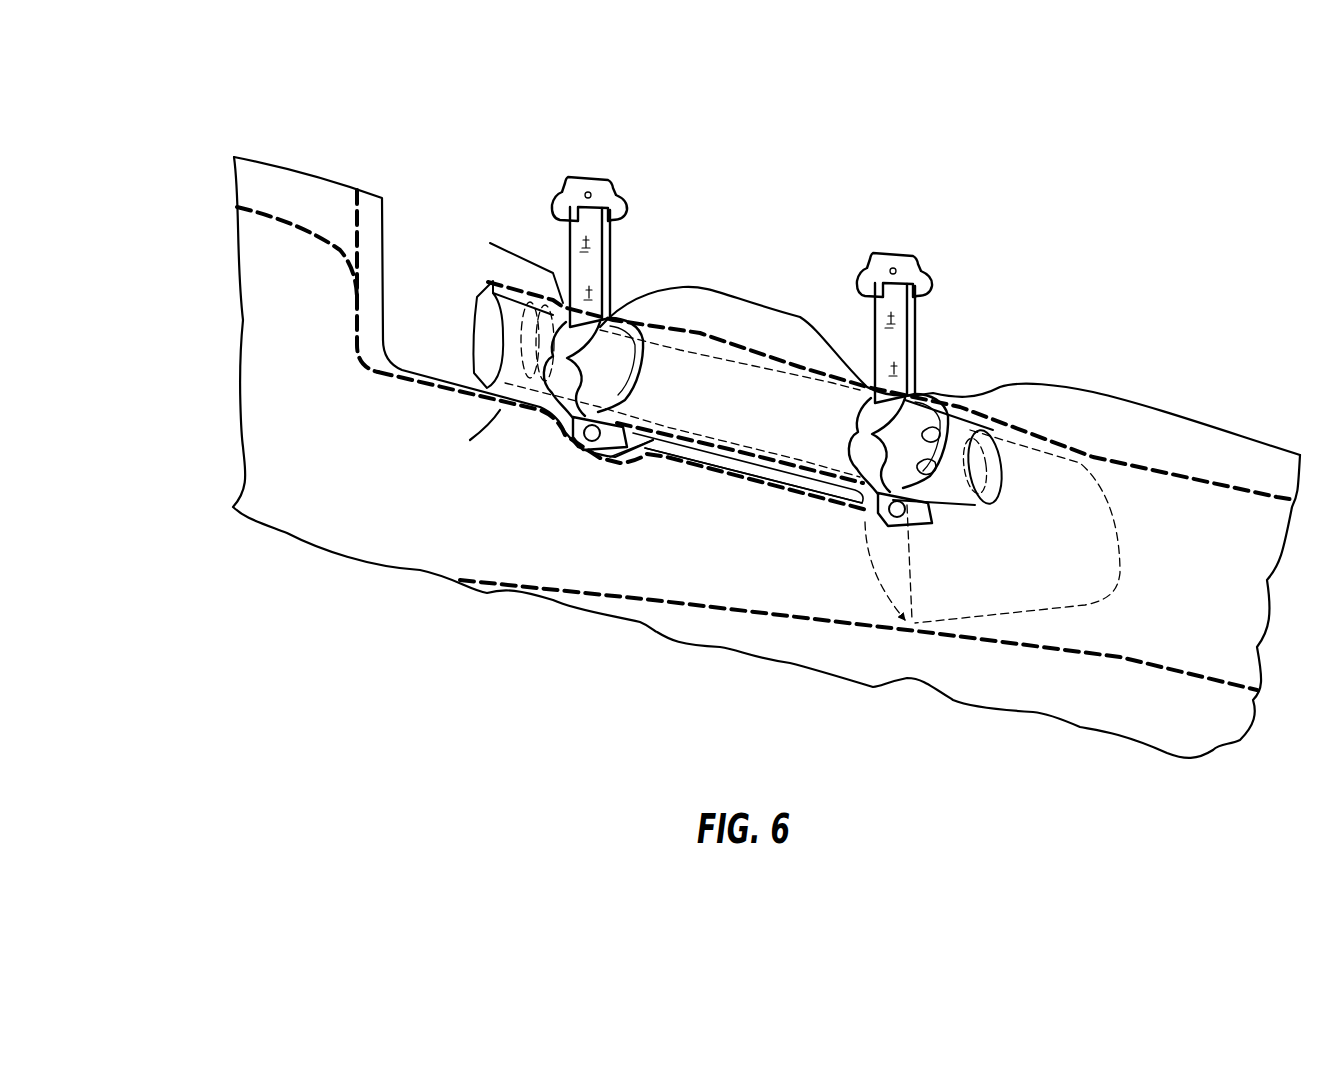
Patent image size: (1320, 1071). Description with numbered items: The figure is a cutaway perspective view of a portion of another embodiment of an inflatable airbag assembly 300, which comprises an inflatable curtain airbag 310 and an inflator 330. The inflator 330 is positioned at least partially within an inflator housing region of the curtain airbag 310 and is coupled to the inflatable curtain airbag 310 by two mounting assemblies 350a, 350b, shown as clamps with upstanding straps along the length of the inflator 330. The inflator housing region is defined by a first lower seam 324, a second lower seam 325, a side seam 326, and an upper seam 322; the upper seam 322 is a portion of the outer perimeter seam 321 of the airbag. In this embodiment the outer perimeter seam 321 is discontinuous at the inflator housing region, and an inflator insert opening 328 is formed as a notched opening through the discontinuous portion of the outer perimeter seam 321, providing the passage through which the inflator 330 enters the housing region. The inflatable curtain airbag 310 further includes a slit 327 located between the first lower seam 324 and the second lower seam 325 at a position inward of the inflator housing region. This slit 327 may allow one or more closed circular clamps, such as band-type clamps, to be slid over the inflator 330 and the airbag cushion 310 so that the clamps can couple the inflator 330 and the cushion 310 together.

The inflatable airbag assembly 300 is at (1072, 136).
The inflatable curtain airbag 310 is at (1177, 550).
The outer perimeter seam 321 is at (283, 225).
The upper seam 322 is at (712, 345).
The first lower seam 324 is at (653, 440).
The second lower seam 325 is at (500, 410).
The side seam 326 is at (353, 312).
The slit 327 is at (790, 473).
The inflator insert opening 328 is at (438, 282).
The inflator 330 is at (770, 388).
The mounting assembly 350a is at (640, 241).
The mounting assembly 350b is at (852, 300).